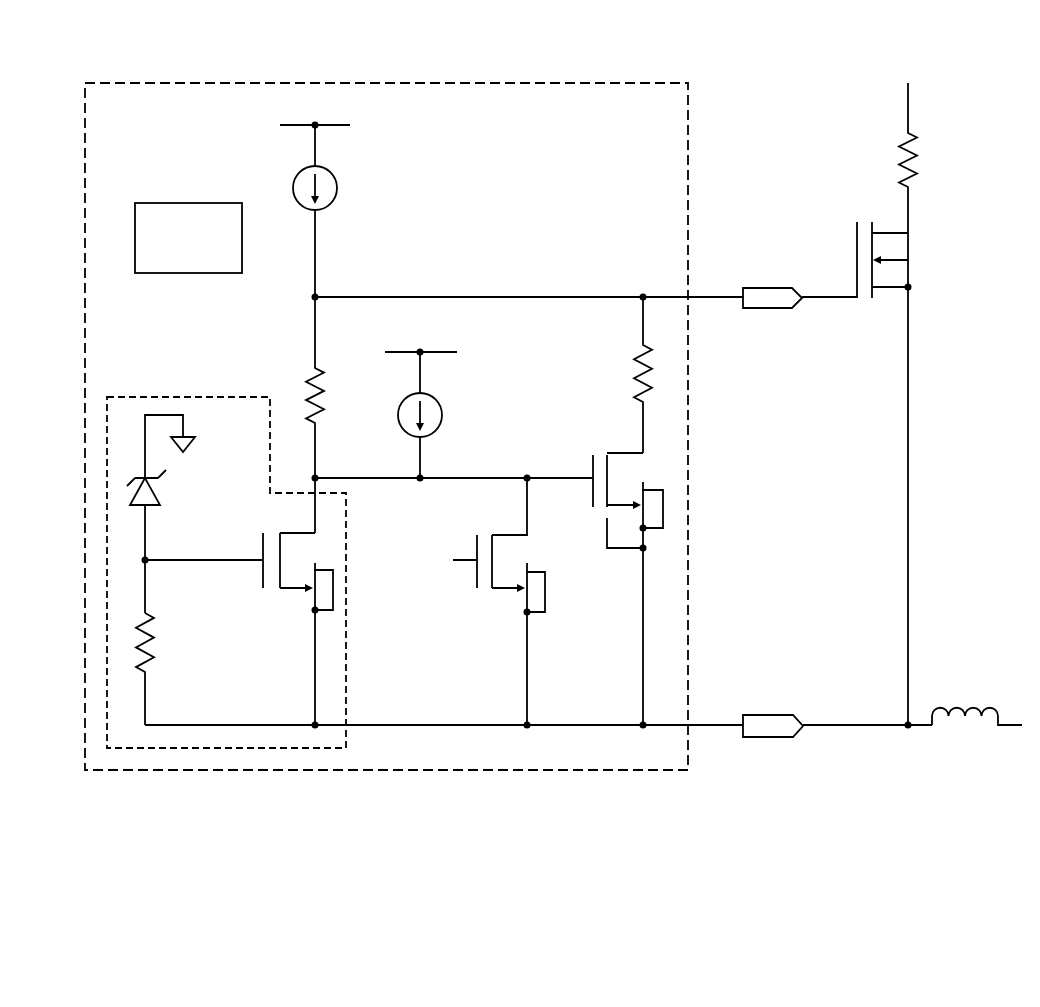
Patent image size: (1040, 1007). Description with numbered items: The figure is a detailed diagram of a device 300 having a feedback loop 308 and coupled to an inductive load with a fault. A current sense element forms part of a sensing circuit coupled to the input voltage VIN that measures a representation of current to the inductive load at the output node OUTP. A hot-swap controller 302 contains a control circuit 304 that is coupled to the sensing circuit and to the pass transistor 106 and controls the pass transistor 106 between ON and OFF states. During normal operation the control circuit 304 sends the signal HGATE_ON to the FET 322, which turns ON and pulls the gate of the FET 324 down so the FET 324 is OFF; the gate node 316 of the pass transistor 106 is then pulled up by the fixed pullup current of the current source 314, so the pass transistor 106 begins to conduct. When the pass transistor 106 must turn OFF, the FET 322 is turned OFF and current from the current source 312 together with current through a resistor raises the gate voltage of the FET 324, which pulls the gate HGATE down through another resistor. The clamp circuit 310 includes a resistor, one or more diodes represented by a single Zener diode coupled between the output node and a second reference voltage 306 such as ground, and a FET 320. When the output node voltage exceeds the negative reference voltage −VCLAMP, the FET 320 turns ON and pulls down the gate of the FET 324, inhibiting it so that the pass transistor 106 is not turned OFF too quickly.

The device 300 is at (149, 38).
The hot-swap controller 302 is at (383, 83).
The control circuit 304 is at (188, 203).
The second reference voltage 306 is at (196, 449).
The feedback loop 308 is at (433, 728).
The clamp circuit 310 is at (193, 397).
The current source 312 is at (444, 415).
The current source 314 is at (338, 190).
The gate node of pass transistor 316 is at (313, 297).
The FET 320 is at (300, 533).
The FET 322 is at (507, 533).
The FET 324 is at (627, 453).
The pass transistor 106 is at (888, 232).